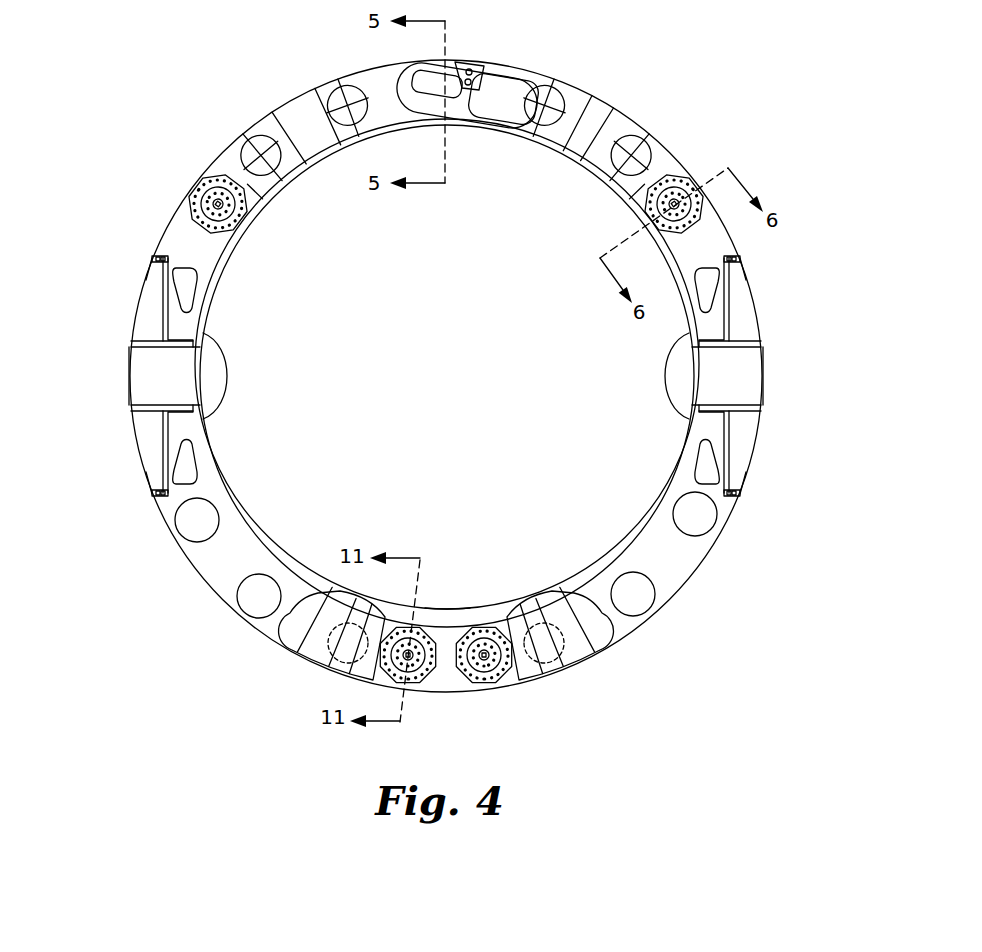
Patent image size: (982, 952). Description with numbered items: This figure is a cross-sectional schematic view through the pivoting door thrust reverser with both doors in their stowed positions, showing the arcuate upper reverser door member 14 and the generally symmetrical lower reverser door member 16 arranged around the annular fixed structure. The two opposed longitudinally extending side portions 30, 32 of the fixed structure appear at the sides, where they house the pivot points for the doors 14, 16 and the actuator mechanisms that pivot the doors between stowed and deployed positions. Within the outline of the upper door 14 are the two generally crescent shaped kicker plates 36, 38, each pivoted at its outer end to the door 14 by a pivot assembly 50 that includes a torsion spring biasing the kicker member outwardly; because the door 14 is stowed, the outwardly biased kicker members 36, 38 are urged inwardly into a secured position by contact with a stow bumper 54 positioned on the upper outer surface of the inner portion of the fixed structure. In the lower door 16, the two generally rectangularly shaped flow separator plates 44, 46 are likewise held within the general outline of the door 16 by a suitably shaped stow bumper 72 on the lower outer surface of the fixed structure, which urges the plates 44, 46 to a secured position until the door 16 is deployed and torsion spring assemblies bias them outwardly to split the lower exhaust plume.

The upper reverser door member 14 is at (598, 98).
The lower reverser door member 16 is at (670, 600).
The side portion 30 is at (757, 312).
The side portion 32 is at (134, 433).
The kicker plate 36 is at (293, 100).
The kicker plate 38 is at (665, 147).
The flow separator plate 44 is at (292, 640).
The flow separator plate 46 is at (617, 642).
The pivot assembly 50 is at (196, 184).
The stow bumper 54 is at (457, 128).
The stow bumper 72 is at (463, 608).